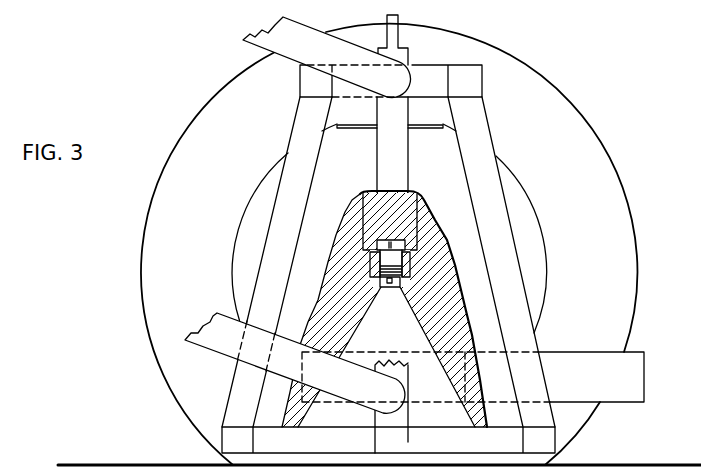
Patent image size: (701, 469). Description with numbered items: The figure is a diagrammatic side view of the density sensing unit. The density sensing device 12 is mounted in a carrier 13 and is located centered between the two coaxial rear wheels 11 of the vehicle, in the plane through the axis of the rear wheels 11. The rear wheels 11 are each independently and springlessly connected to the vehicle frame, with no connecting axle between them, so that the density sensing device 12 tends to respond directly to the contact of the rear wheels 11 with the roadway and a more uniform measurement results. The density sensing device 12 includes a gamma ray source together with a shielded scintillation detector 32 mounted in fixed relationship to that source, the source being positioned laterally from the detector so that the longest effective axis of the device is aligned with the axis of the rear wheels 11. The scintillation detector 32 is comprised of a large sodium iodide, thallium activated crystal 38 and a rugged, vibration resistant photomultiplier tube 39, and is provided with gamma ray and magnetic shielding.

The rear wheels 11 is at (145, 228).
The density sensing device 12 is at (126, 304).
The carrier 13 is at (489, 149).
The scintillation detector 32 is at (551, 353).
The crystal 38 is at (457, 330).
The photomultiplier tube 39 is at (598, 387).